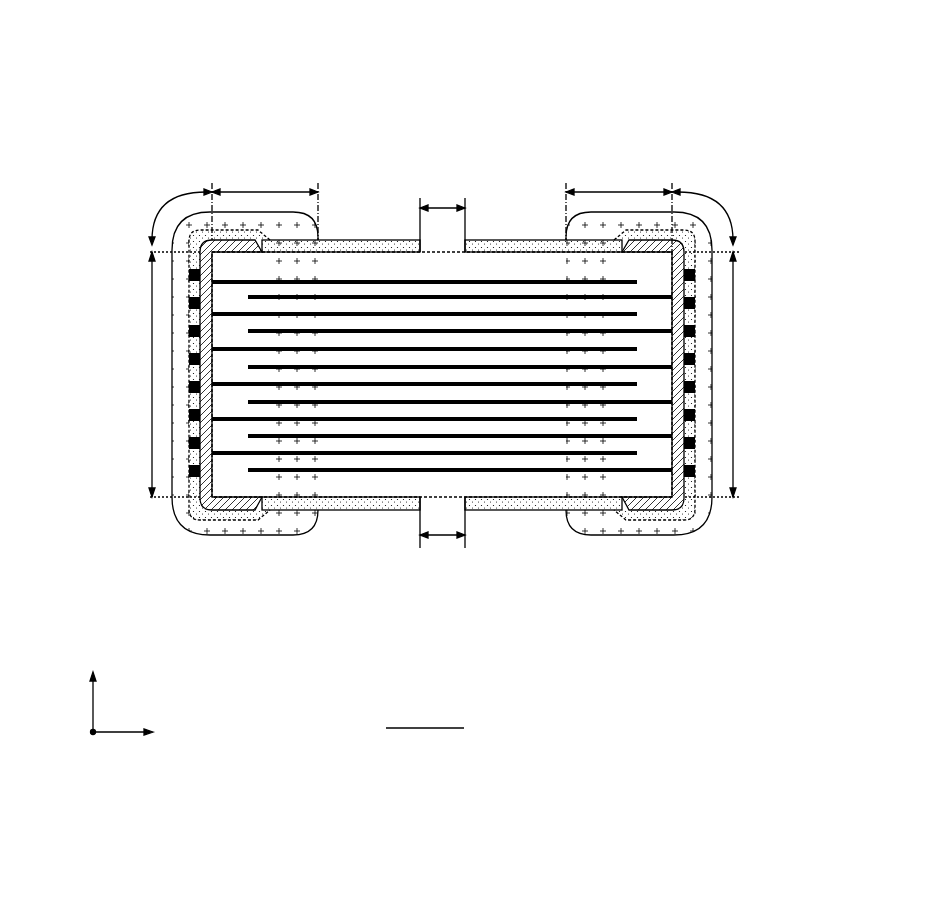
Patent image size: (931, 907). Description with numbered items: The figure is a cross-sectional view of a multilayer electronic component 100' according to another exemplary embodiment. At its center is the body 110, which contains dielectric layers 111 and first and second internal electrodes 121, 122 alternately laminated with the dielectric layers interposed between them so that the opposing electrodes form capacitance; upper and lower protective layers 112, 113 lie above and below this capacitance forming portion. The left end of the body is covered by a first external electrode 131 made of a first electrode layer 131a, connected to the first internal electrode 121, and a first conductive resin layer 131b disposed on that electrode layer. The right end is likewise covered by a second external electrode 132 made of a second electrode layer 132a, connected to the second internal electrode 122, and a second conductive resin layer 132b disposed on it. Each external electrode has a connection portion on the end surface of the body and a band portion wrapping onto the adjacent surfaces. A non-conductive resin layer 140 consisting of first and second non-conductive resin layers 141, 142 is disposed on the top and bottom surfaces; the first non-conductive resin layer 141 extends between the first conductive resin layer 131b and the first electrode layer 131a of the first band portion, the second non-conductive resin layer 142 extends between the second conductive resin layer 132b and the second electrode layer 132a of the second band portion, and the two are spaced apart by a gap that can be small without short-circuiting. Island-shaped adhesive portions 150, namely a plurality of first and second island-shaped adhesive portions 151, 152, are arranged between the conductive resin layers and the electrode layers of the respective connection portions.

The multilayer electronic component 100' is at (435, 439).
The body 110 is at (526, 240).
The dielectric layer 111 is at (496, 290).
The upper protective layer 112 is at (538, 255).
The lower protective layer 113 is at (540, 490).
The first internal electrode 121 is at (352, 282).
The second internal electrode 122 is at (396, 297).
The first external electrode 131 is at (229, 424).
The first electrode layer 131a is at (218, 504).
The first conductive resin layer 131b is at (245, 405).
The second external electrode 132 is at (664, 424).
The second electrode layer 132a is at (664, 505).
The second conductive resin layer 132b is at (635, 594).
The non-conductive resin layer 140 is at (442, 577).
The first non-conductive resin layer 141 is at (367, 505).
The second non-conductive resin layer 142 is at (543, 558).
The island-shaped adhesive portions 150 is at (740, 78).
The first island-shaped adhesive portions 151 is at (195, 302).
The second island-shaped adhesive portions 152 is at (690, 303).